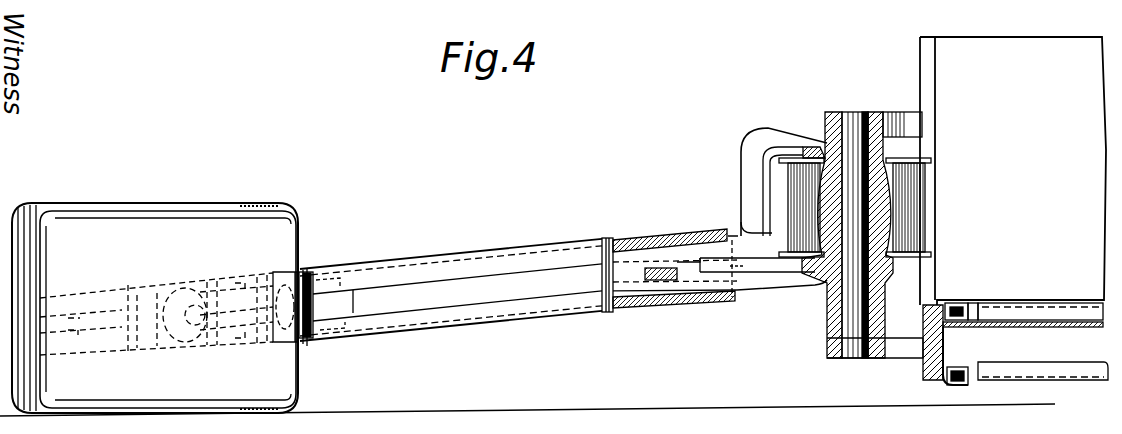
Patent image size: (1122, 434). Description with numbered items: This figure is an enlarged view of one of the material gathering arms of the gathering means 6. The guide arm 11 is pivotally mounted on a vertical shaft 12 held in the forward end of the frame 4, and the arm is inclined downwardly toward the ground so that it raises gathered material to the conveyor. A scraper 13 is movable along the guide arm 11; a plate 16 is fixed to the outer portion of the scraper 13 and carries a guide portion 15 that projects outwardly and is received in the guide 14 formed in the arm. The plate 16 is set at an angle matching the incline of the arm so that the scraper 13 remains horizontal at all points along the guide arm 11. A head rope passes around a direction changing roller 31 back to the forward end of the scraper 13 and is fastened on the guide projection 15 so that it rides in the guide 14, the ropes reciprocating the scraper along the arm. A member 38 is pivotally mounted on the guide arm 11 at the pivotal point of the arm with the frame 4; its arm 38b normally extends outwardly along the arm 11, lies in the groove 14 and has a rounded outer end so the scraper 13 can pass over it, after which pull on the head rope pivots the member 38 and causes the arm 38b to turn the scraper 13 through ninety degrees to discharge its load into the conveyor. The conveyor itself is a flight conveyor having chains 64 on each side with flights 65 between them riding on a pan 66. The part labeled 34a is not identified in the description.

The frame 4 is at (935, 72).
The gathering means 6 is at (618, 238).
The guide arm 11 is at (660, 236).
The vertical shaft 12 is at (855, 112).
The scraper 13 is at (196, 406).
The guide 14 is at (440, 300).
The guide portion 15 is at (326, 297).
The plate 16 is at (310, 338).
The direction changing roller 31 is at (932, 210).
The mechanism 34a is at (82, 316).
The member 38 is at (776, 278).
The arm 38b is at (748, 276).
The chain 64 is at (966, 303).
The flight 65 is at (1050, 292).
The pan 66 is at (1064, 322).